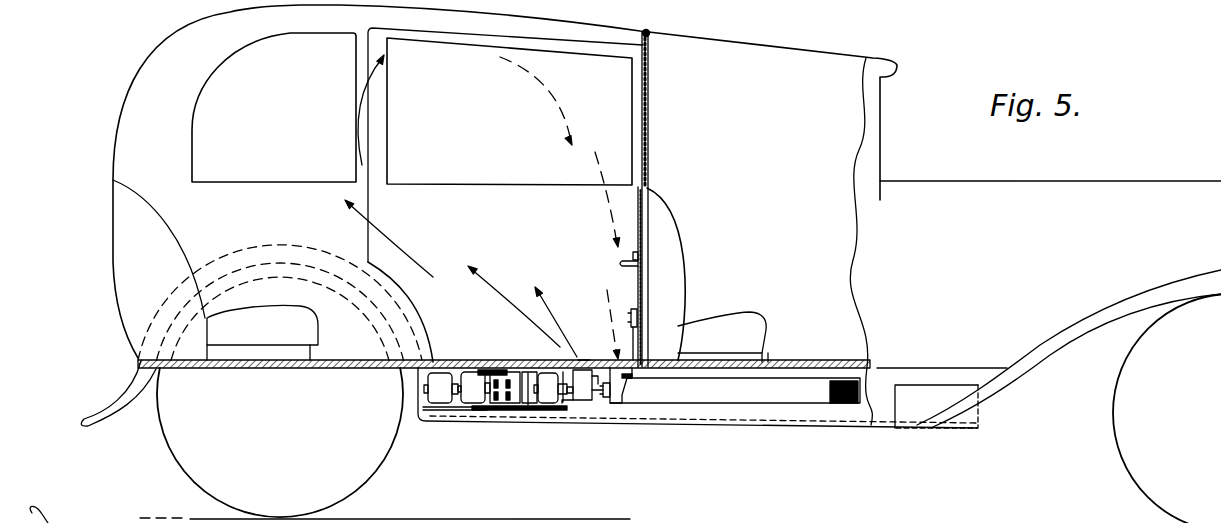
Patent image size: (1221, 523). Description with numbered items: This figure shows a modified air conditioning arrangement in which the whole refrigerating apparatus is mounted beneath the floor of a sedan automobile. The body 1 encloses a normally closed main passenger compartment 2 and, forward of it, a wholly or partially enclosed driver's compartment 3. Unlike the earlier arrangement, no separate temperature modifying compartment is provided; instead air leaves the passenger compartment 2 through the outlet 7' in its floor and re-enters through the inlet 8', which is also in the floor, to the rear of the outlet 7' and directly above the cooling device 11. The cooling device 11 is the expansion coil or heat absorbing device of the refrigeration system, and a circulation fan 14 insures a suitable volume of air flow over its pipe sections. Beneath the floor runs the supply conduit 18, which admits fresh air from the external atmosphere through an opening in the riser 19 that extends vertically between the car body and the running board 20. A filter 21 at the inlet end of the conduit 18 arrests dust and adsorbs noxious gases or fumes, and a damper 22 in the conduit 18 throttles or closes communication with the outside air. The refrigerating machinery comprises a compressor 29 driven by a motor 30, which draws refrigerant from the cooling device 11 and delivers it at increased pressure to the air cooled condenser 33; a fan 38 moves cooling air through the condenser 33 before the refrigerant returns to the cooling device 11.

The body 1 is at (625, 264).
The main passenger compartment 2 is at (505, 195).
The driver's compartment 3 is at (707, 275).
The outlet 7' is at (643, 277).
The inlet 8' is at (588, 346).
The cooling device 11 is at (583, 393).
The circulation fan 14 is at (610, 403).
The supply conduit 18 is at (735, 390).
The riser 19 is at (890, 410).
The running board 20 is at (877, 430).
The filter 21 is at (840, 406).
The damper 22 is at (628, 390).
The compressor 29 is at (473, 398).
The motor 30 is at (437, 395).
The condenser 33 is at (507, 390).
The fan 38 is at (523, 402).